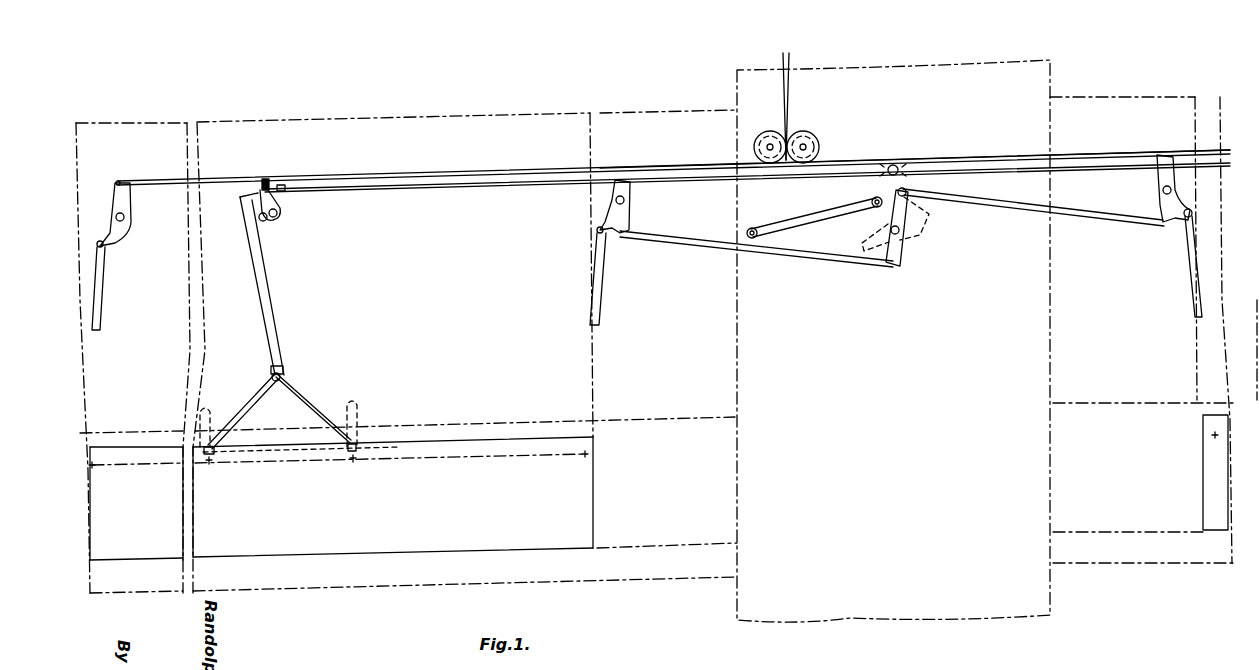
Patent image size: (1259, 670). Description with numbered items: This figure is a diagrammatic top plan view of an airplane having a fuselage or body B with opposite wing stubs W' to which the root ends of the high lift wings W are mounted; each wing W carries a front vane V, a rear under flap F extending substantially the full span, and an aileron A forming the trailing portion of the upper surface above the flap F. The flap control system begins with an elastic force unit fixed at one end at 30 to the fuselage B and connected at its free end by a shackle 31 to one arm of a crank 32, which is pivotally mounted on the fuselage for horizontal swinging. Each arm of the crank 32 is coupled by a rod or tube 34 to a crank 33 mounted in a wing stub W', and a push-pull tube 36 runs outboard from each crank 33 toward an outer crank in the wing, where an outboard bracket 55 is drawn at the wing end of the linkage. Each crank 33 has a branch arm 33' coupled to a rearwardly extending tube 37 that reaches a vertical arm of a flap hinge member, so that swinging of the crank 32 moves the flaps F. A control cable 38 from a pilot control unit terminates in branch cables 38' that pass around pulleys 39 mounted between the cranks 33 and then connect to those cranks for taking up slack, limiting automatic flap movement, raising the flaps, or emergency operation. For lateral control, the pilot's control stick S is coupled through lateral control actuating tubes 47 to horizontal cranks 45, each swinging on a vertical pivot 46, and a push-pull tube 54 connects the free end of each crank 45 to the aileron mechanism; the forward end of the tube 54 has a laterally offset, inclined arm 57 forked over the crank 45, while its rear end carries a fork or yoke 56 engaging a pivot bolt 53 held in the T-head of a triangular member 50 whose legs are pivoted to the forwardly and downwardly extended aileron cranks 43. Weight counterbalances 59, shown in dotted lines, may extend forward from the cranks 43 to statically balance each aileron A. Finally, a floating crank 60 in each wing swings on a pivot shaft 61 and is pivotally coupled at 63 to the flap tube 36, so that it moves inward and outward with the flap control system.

The fixed end of force unit 30 is at (747, 231).
The shackle 31 is at (897, 192).
The crank 32 is at (903, 243).
The crank 33 is at (896, 194).
The branch arm 33' is at (573, 222).
The rod or tube 34 is at (817, 258).
The push-pull tube 36 is at (325, 178).
The tube 37 is at (98, 285).
The control cable 38 is at (805, 106).
The branch cables 38' is at (915, 152).
The pulleys 39 is at (818, 146).
The aileron cranks 43 is at (186, 478).
The crank 45 is at (278, 203).
The pivot 46 is at (278, 222).
The lateral control actuating tubes 47 is at (337, 190).
The triangular member 50 is at (253, 405).
The pivot bolt 53 is at (282, 377).
The push-pull member or tube 54 is at (266, 312).
The clamp 55 is at (130, 198).
The fork or yoke member 56 is at (279, 373).
The laterally offset arm 57 is at (262, 180).
The weight counterbalances 59 is at (357, 417).
The crank 60 is at (257, 205).
The pivot pin or shaft 61 is at (260, 223).
The pivotal connection 63 is at (270, 180).
The pilot's control stick S is at (897, 167).
The front vane V is at (803, 218).
The wings W is at (810, 102).
The wing stubs W' is at (907, 125).
The aileron A is at (781, 496).
The fuselage or body B is at (967, 343).
The rear under flap F is at (400, 577).